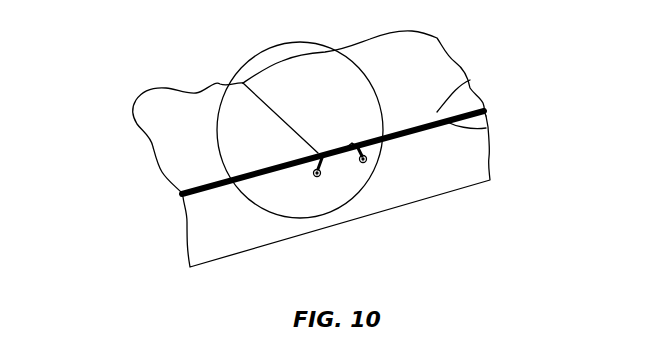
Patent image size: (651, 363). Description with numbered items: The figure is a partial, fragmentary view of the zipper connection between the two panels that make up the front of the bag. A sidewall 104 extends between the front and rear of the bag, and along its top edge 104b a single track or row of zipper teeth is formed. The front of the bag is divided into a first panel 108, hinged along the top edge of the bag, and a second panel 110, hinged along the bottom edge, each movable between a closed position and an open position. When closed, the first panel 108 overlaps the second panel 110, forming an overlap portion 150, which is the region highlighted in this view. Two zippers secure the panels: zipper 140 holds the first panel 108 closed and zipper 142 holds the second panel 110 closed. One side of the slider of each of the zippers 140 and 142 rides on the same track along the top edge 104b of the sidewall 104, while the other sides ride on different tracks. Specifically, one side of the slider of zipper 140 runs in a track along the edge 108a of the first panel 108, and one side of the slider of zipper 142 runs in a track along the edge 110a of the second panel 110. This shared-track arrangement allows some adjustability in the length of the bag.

The sidewall 104 is at (222, 230).
The top edge of the wall 104b is at (447, 122).
The first panel 108 is at (421, 60).
The edge of the first panel 108a is at (430, 120).
The second panel 110 is at (170, 128).
The edge of the second panel 110a is at (230, 182).
The zipper 140 is at (370, 160).
The zipper 142 is at (319, 178).
The overlap portion 150 is at (381, 188).